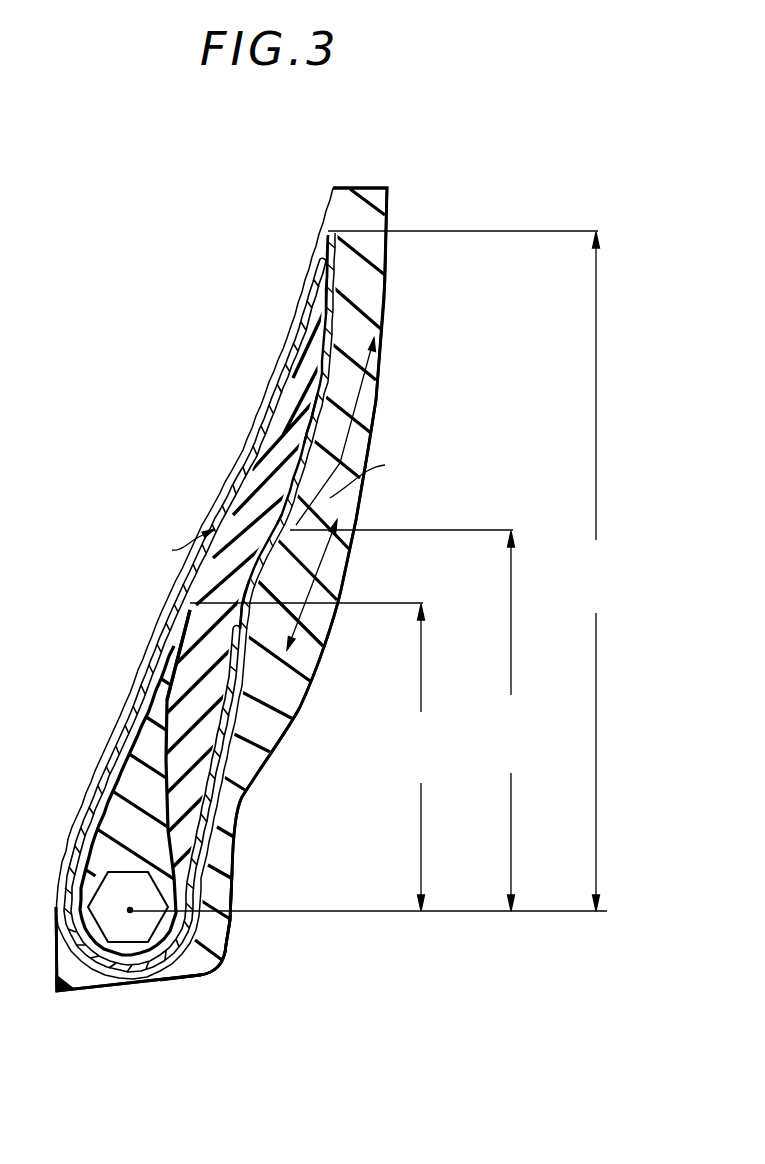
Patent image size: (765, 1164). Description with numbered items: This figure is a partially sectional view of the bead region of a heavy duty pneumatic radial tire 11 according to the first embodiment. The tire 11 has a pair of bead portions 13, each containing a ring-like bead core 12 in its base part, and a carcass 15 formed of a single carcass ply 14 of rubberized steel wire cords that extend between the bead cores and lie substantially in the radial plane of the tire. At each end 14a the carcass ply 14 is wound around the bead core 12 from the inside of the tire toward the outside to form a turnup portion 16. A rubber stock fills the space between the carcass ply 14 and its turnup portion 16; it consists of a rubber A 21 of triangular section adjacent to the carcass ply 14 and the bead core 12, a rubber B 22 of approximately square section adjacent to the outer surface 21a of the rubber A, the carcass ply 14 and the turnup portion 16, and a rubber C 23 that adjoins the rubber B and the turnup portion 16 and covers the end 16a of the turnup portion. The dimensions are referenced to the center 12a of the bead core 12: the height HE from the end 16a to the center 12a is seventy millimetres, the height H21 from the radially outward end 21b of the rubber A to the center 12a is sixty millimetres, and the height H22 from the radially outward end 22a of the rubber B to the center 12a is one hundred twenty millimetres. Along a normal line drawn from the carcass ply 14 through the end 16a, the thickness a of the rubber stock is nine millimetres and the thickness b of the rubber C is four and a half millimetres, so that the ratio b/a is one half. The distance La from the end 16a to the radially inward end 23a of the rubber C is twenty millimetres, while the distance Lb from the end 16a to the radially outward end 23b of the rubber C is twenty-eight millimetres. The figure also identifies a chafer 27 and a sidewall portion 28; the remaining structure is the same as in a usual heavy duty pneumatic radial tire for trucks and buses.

The heavy duty pneumatic radial tire 11 is at (415, 215).
The bead core 12 is at (92, 970).
The center of bead core 12a is at (130, 914).
The bead portion 13 is at (352, 557).
The carcass ply 14 is at (262, 400).
The end of carcass ply 14a is at (240, 626).
The carcass 15 is at (136, 680).
The turnup portion 16 is at (222, 703).
The end of turnup portion 16a is at (323, 516).
The rubber A 21 is at (130, 746).
The outer surface of rubber A 21a is at (218, 780).
The radially outward end of rubber A 21b is at (205, 600).
The rubber B 22 is at (247, 468).
The radially outward end of rubber B 22a is at (321, 255).
The rubber C 23 is at (376, 393).
The radially inward end of rubber C 23a is at (297, 693).
The radially outward end of rubber C 23b is at (333, 316).
The chafer 27 is at (187, 925).
The sidewall portion 28 is at (392, 262).
The rubber A is at (122, 811).
The rubber B is at (201, 650).
The rubber C is at (289, 481).
The thickness of rubber stock a is at (185, 546).
The thickness of rubber C b is at (366, 473).
The distance from turnup end to radially inward end of rubber C La is at (343, 602).
The length Lb is at (362, 422).
The height of radially outward end of rubber A H21 is at (368, 757).
The height of turnup end HE is at (406, 720).
The height of radially outward end of rubber B H22 is at (472, 571).